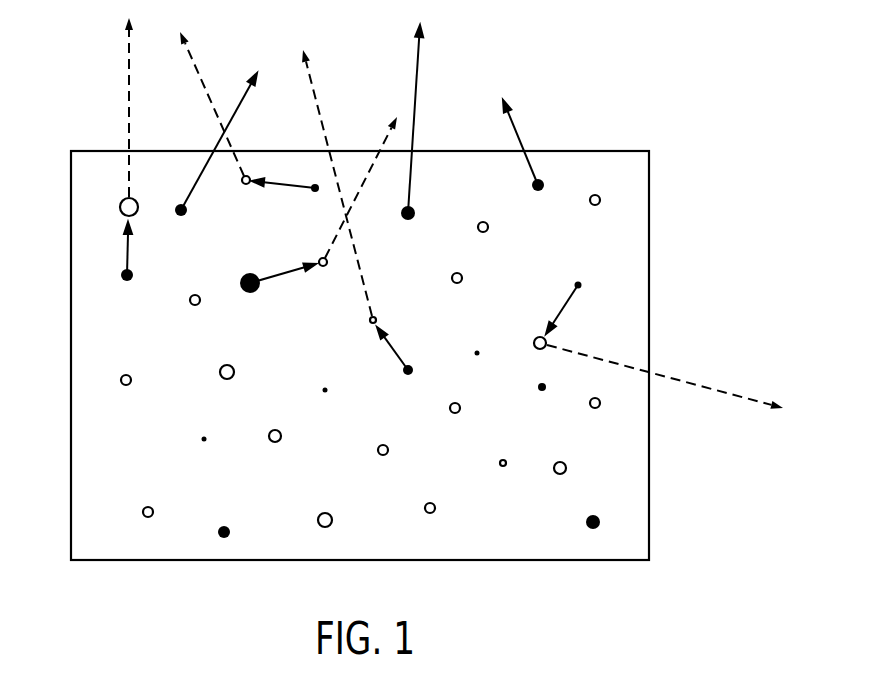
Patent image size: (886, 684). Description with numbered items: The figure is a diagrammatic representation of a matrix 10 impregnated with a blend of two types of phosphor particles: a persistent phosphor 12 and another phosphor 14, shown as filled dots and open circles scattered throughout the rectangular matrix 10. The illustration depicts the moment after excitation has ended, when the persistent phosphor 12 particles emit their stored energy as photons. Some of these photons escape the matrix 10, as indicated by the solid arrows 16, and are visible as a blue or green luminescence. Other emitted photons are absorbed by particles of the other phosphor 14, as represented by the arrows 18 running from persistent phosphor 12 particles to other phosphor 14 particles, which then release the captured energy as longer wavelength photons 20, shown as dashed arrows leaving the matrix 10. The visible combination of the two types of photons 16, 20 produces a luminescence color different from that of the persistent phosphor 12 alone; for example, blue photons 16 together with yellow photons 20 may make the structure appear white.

The matrix 10 is at (633, 270).
The persistent phosphor 12 is at (121, 275).
The another phosphor 14 is at (599, 197).
The photons escaping the matrix 16 is at (418, 95).
The absorption of emitted photons 18 is at (128, 250).
The longer wavelength photons 20 is at (320, 113).